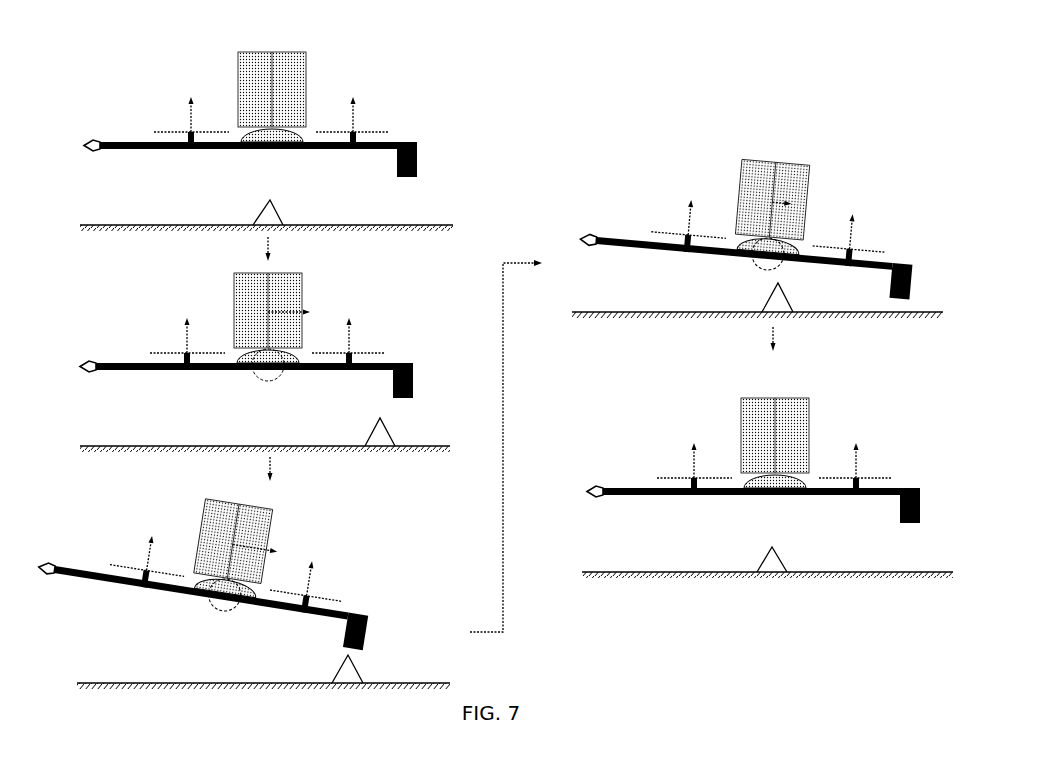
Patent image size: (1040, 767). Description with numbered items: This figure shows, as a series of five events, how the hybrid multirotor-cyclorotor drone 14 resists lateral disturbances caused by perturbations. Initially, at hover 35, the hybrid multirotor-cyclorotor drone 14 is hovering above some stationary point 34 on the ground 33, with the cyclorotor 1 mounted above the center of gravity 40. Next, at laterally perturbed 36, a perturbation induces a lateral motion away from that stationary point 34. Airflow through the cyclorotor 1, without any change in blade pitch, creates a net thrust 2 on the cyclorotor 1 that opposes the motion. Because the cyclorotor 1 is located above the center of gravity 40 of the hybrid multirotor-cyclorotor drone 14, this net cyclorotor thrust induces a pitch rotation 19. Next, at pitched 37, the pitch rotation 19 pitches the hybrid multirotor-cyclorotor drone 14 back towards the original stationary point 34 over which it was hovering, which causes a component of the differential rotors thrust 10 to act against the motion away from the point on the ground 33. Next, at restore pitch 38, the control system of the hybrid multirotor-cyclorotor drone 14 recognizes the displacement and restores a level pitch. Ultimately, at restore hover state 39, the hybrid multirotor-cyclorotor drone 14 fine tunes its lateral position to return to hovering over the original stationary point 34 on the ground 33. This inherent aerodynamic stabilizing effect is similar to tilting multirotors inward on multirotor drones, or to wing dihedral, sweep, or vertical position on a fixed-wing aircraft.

The cyclorotor 1 is at (287, 53).
The net thrust 2 is at (304, 310).
The differential rotors thrust 10 is at (313, 563).
The hybrid multirotor-cyclorotor drone 14 is at (319, 96).
The pitch rotation 19 is at (255, 378).
The ground 33 is at (426, 223).
The stationary point 34 is at (278, 206).
The hover 35 is at (121, 80).
The laterally perturbed 36 is at (123, 271).
The pitched 37 is at (117, 483).
The restore pitch 38 is at (625, 166).
The restore hover state 39 is at (633, 381).
The center of gravity 40 is at (272, 146).